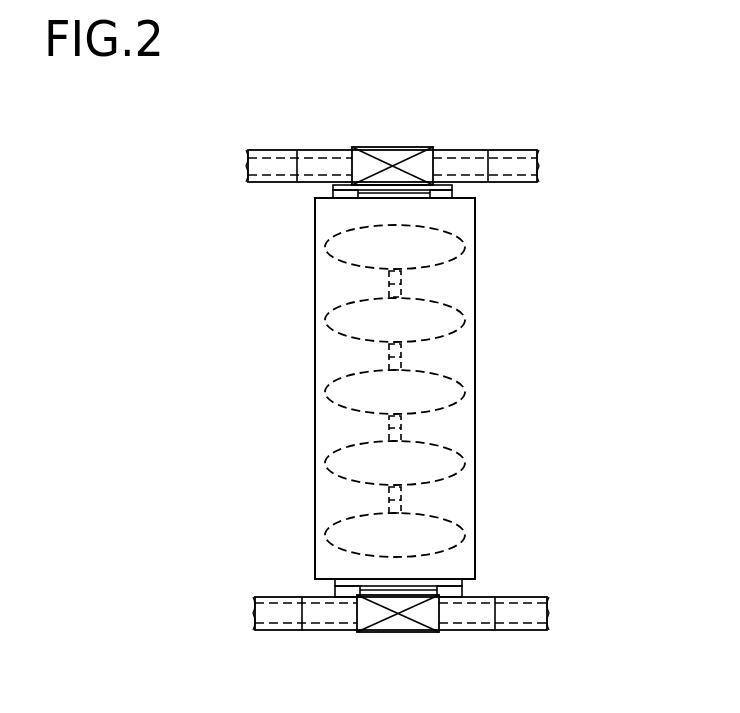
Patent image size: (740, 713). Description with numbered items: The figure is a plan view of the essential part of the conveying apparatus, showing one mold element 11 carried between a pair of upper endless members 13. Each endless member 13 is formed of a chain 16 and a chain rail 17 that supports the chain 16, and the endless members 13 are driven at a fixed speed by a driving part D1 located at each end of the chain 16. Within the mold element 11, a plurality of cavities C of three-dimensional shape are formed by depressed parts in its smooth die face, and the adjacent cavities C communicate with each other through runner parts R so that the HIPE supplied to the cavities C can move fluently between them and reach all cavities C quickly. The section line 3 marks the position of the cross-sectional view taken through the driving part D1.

The mold element 11 is at (314, 358).
The upper endless member 13 is at (278, 149).
The chain 16 is at (510, 157).
The chain rail 17 is at (514, 183).
The runner part R is at (328, 341).
The cavity C is at (467, 250).
The driving part D1 is at (416, 147).
The section line 3- 3 is at (393, 132).